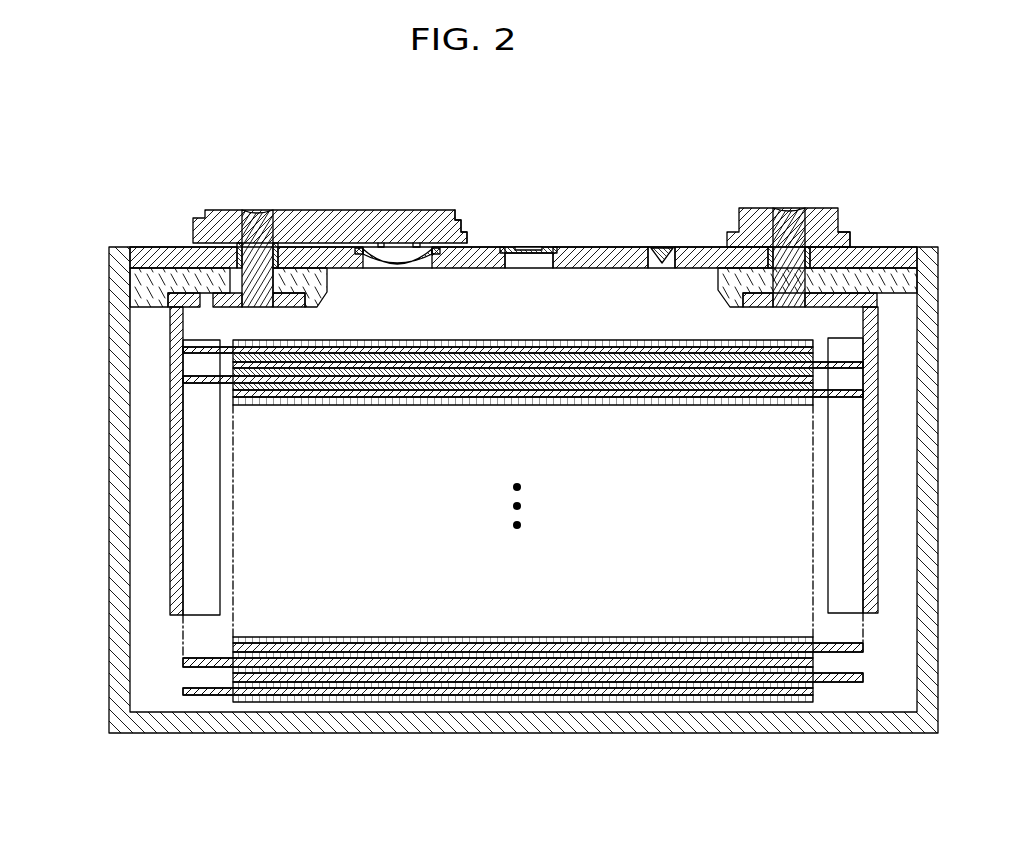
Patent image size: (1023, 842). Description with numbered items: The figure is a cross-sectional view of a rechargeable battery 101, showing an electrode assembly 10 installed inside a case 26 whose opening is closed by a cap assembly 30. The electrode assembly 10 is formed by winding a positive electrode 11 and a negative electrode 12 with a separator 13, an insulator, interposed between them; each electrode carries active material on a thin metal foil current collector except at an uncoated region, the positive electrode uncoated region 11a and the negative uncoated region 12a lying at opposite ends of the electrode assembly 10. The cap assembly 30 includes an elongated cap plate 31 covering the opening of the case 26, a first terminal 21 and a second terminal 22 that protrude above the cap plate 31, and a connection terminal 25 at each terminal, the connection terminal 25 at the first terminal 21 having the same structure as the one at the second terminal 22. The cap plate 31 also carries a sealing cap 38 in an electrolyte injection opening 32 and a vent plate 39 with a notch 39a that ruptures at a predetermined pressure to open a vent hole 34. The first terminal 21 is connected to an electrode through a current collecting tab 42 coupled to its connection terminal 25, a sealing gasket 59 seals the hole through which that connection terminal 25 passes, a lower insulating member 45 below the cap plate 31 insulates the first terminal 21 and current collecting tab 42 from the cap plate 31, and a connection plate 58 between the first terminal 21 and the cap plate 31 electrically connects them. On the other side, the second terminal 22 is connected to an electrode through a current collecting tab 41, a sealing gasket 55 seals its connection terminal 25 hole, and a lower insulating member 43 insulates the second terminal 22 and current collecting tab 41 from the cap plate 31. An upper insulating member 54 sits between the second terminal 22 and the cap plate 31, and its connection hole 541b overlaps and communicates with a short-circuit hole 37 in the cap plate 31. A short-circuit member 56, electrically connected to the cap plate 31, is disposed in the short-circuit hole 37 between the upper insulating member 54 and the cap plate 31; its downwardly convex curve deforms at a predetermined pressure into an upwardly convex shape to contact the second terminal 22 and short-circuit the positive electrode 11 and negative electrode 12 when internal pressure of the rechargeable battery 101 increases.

The rechargeable battery 101 is at (528, 86).
The electrode assembly 10 is at (523, 564).
The positive electrode 11 is at (548, 574).
The positive electrode uncoated region 11a is at (838, 574).
The negative electrode 12 is at (498, 566).
The negative uncoated region 12a is at (208, 566).
The separator 13 is at (523, 563).
The first terminal 21 is at (805, 200).
The second terminal 22 is at (333, 173).
The connection terminal 25 is at (523, 226).
The case 26 is at (552, 490).
The cap assembly 30 is at (531, 206).
The cap plate 31 is at (871, 226).
The electrolyte injection opening 32 is at (659, 257).
The vent hole 34 is at (542, 252).
The short-circuit hole 37 is at (394, 205).
The sealing cap 38 is at (663, 228).
The vent plate 39 is at (542, 218).
The notch 39a is at (527, 218).
The current collecting tab 41 is at (137, 482).
The current collecting tab 42 is at (913, 475).
The lower insulating member 43 is at (190, 287).
The lower insulating member 45 is at (858, 287).
The upper insulating member 54 is at (460, 186).
The connection hole 541b is at (413, 173).
The sealing gasket 55 is at (214, 216).
The short-circuit member 56 is at (397, 205).
The connection plate 58 is at (860, 207).
The sealing gasket 59 is at (756, 219).